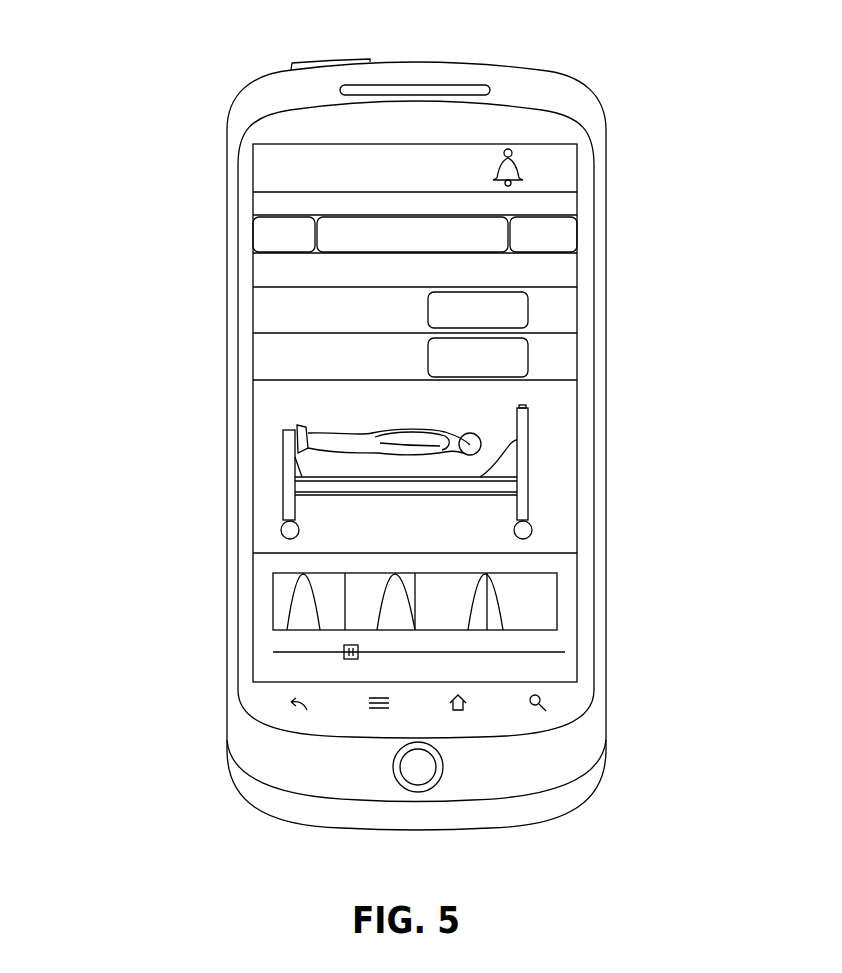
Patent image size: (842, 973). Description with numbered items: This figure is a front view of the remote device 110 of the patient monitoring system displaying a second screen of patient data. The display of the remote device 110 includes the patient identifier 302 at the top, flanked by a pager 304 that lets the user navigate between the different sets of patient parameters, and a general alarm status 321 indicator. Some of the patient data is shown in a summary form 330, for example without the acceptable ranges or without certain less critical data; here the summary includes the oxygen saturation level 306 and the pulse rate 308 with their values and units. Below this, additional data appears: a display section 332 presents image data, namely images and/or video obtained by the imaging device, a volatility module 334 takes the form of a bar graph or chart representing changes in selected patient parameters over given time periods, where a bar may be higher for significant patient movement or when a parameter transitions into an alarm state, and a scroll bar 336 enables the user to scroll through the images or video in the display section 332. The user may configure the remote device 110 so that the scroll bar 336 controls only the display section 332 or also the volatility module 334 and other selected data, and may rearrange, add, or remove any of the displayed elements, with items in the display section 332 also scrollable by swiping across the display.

The remote device 110 is at (624, 68).
The summary form 330 is at (170, 262).
The general alarm status 321 is at (508, 148).
The pager 304 is at (253, 235).
The patient identifier 302 is at (498, 248).
The oxygen saturation level 306 is at (253, 310).
The pulse rate 308 is at (253, 362).
The display section 332 is at (580, 455).
The volatility module 334 is at (557, 602).
The scroll bar 336 is at (565, 652).